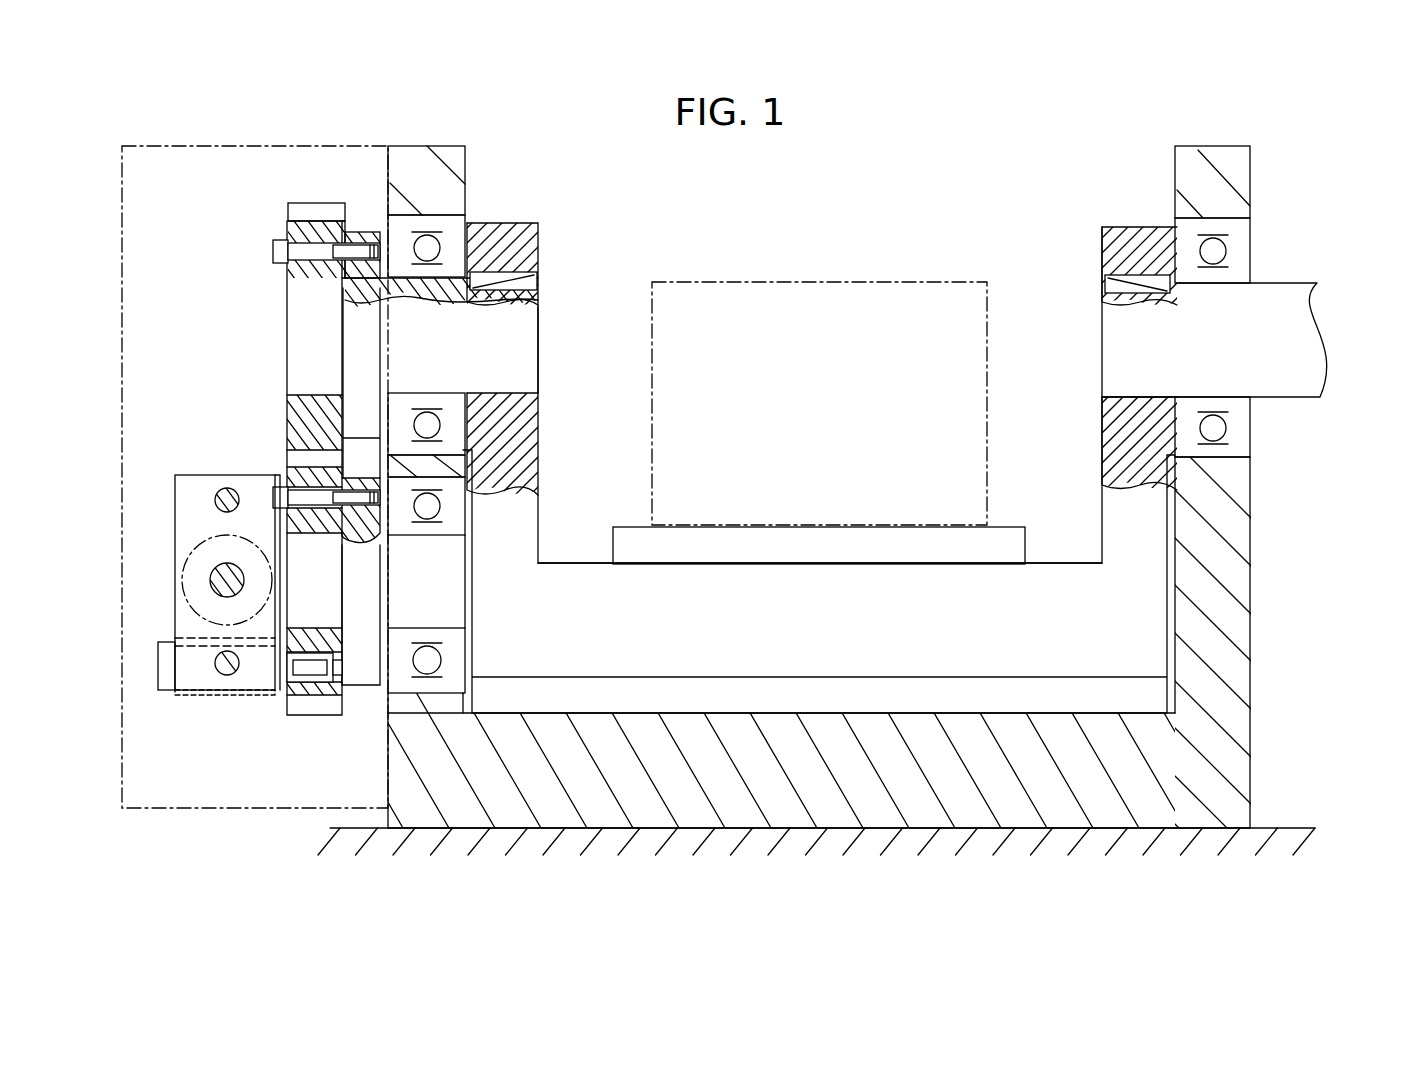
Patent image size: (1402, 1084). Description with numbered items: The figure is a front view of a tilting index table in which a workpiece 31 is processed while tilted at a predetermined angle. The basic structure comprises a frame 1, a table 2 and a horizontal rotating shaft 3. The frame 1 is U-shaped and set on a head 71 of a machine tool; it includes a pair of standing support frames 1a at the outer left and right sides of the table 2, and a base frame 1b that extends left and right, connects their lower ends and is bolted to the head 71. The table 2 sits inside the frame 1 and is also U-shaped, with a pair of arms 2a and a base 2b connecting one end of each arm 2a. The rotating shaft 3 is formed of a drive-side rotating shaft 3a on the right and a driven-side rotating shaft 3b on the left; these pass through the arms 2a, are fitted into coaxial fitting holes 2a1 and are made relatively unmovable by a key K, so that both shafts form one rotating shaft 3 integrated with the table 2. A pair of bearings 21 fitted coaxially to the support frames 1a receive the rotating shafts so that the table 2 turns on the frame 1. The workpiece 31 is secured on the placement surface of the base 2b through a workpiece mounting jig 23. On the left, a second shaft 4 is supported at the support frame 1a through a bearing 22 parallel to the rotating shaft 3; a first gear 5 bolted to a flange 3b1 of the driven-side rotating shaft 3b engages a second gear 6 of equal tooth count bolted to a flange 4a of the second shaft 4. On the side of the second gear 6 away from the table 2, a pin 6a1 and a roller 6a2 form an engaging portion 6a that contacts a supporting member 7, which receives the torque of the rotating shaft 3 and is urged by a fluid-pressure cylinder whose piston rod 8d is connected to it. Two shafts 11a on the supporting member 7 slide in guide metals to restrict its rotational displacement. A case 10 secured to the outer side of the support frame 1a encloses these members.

The frame 1 is at (702, 523).
The support frame 1a is at (398, 708).
The base frame 1b is at (1238, 772).
The table 2 is at (766, 451).
The arm 2a is at (528, 438).
The fitting hole 2a1 is at (510, 386).
The base 2b is at (578, 570).
The rotating shaft 3 is at (692, 430).
The drive-side rotating shaft 3a is at (1325, 343).
The driven-side rotating shaft 3b is at (298, 300).
The flange 3b1 is at (362, 238).
The second shaft 4 is at (493, 453).
The flange 4a is at (358, 680).
The first gear 5 is at (286, 212).
The second gear 6 is at (239, 721).
The engaging portion 6a is at (206, 721).
The pin 6a1 is at (168, 690).
The roller 6a2 is at (204, 696).
The supporting member 7 is at (493, 446).
The piston rod 8d is at (215, 577).
The case 10 is at (143, 808).
The shaft 11a is at (222, 492).
The bearing 21 is at (454, 232).
The bearing 22 is at (405, 640).
The workpiece mounting jig 23 is at (1012, 527).
The workpiece 31 is at (798, 282).
The head 71 is at (1265, 828).
The key K is at (520, 283).